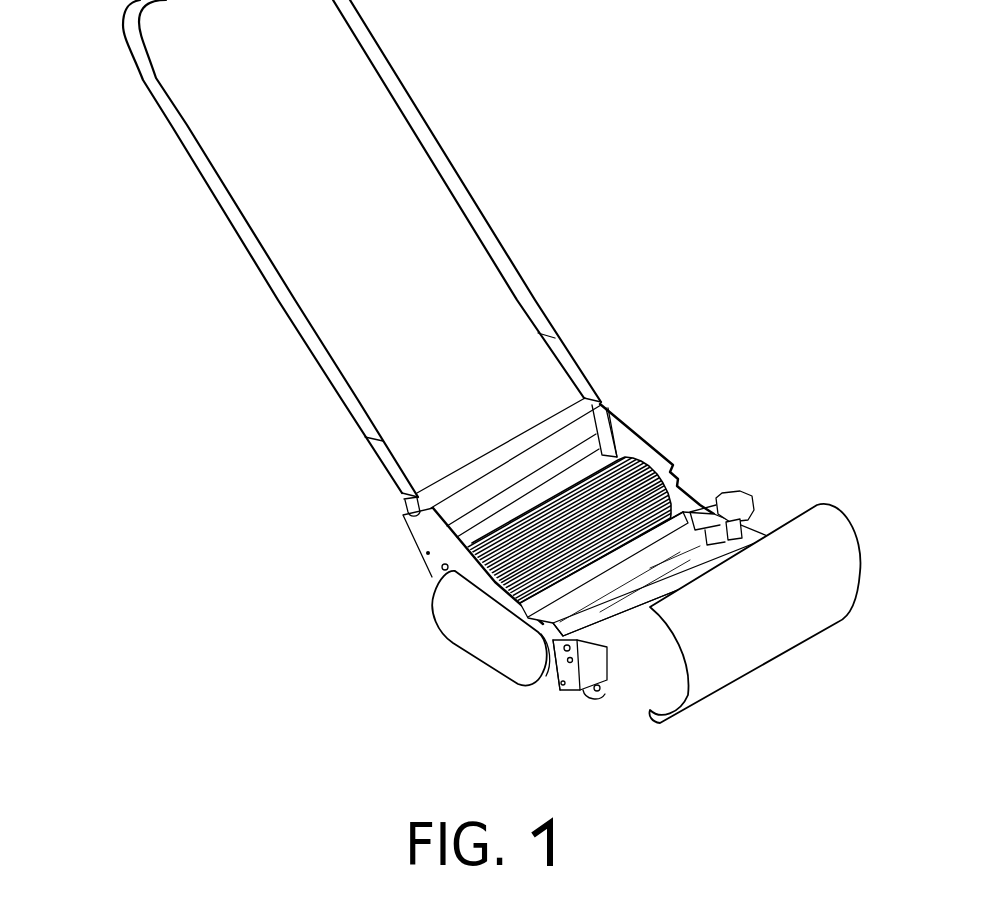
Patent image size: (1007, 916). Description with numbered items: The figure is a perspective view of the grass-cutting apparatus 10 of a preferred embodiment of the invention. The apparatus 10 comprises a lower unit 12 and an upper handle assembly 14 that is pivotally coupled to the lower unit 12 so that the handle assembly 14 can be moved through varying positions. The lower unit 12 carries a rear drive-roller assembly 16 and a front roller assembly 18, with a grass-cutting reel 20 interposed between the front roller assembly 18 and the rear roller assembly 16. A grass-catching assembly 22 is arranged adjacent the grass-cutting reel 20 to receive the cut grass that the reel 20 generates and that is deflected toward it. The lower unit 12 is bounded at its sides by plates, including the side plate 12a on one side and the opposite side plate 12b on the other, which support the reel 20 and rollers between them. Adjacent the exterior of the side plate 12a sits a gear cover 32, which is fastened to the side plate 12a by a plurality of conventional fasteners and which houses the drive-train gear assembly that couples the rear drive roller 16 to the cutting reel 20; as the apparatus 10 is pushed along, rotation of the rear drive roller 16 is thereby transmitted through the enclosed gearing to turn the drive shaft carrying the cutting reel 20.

The apparatus 10 is at (695, 258).
The lower unit 12 is at (737, 453).
The side plate 12a is at (415, 523).
The right side plate 12b is at (604, 404).
The upper handle assembly 14 is at (178, 239).
The rear drive-roller assembly 16 is at (638, 460).
The front roller assembly 18 is at (585, 720).
The grass-cutting reel 20 is at (700, 497).
The grass-catching assembly 22 is at (813, 570).
The gear cover 32 is at (443, 612).